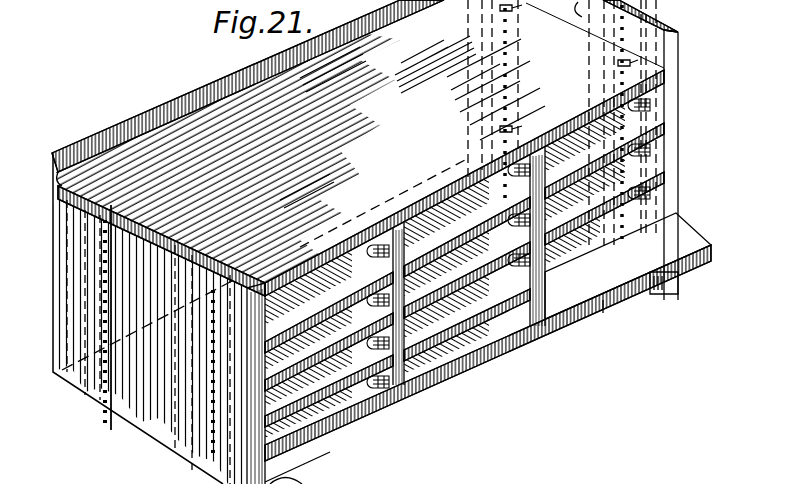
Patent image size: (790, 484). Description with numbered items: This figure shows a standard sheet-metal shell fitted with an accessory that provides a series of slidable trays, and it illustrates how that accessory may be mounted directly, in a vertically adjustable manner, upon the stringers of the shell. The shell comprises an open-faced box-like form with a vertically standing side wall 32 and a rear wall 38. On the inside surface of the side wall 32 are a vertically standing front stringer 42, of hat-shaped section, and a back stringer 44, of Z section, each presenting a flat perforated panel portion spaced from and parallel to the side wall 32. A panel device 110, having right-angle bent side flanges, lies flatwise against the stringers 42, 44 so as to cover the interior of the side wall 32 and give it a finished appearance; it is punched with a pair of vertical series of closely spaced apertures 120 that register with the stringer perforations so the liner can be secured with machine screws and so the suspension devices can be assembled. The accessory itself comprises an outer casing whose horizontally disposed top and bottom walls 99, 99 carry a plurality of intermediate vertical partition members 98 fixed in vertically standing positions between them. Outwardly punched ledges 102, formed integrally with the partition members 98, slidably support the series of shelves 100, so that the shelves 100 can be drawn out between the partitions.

The side wall 32 is at (58, 197).
The rear wall 38 is at (184, 92).
The front stringer 42 is at (235, 247).
The back stringer 44 is at (107, 200).
The intermediate vertical partition member 98 is at (548, 304).
The top and bottom walls of the casing 99 is at (426, 125).
The shelf 100 is at (622, 189).
The outwardly punched ledge 102 is at (519, 266).
The panel device 110 is at (181, 227).
The apertures 120 is at (666, 42).